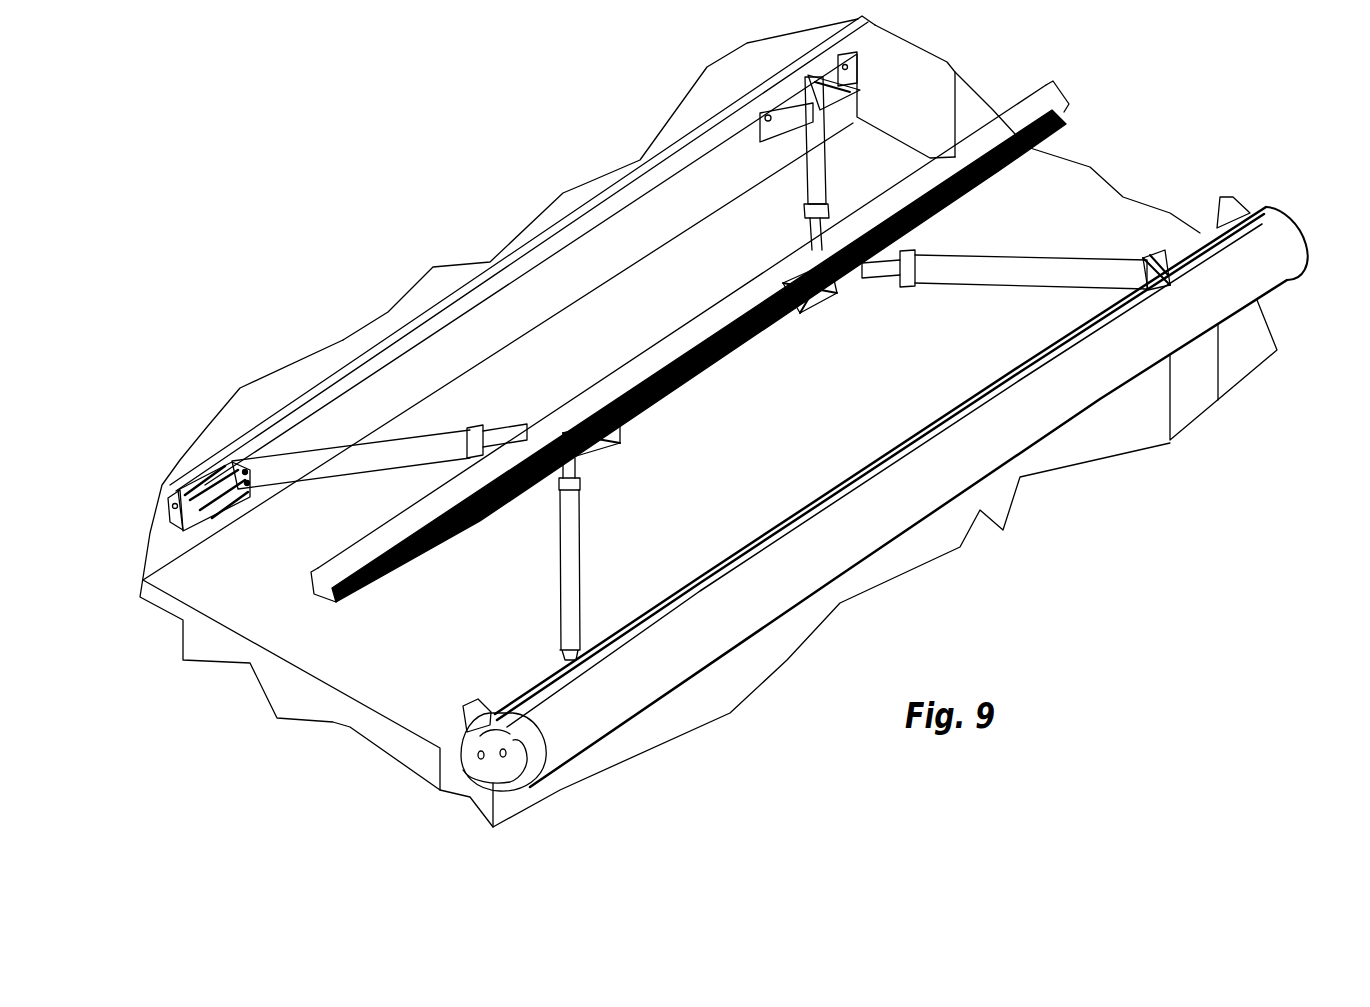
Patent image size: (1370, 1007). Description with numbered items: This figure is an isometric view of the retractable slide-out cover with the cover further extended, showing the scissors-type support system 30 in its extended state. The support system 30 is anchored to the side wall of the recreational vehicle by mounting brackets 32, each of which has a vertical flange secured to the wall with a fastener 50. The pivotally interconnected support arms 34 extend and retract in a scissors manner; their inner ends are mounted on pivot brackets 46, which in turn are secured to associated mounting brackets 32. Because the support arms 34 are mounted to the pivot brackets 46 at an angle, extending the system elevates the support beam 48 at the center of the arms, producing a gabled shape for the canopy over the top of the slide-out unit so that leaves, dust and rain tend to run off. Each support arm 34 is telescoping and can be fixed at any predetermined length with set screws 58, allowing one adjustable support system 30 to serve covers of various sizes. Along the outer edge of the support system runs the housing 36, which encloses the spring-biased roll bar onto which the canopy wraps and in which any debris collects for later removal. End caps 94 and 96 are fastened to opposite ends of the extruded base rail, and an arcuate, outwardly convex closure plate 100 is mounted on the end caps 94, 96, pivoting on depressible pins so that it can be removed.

The support system 30 is at (458, 555).
The mounting bracket 32 is at (207, 534).
The support arm 34 is at (348, 463).
The housing 36 is at (702, 681).
The pivot bracket 46 is at (857, 90).
The support beam 48 is at (658, 345).
The fastener 50 is at (560, 493).
The set screw 58 is at (410, 460).
The end cap 94 is at (530, 762).
The end cap 96 is at (1297, 232).
The closure plate 100 is at (870, 517).